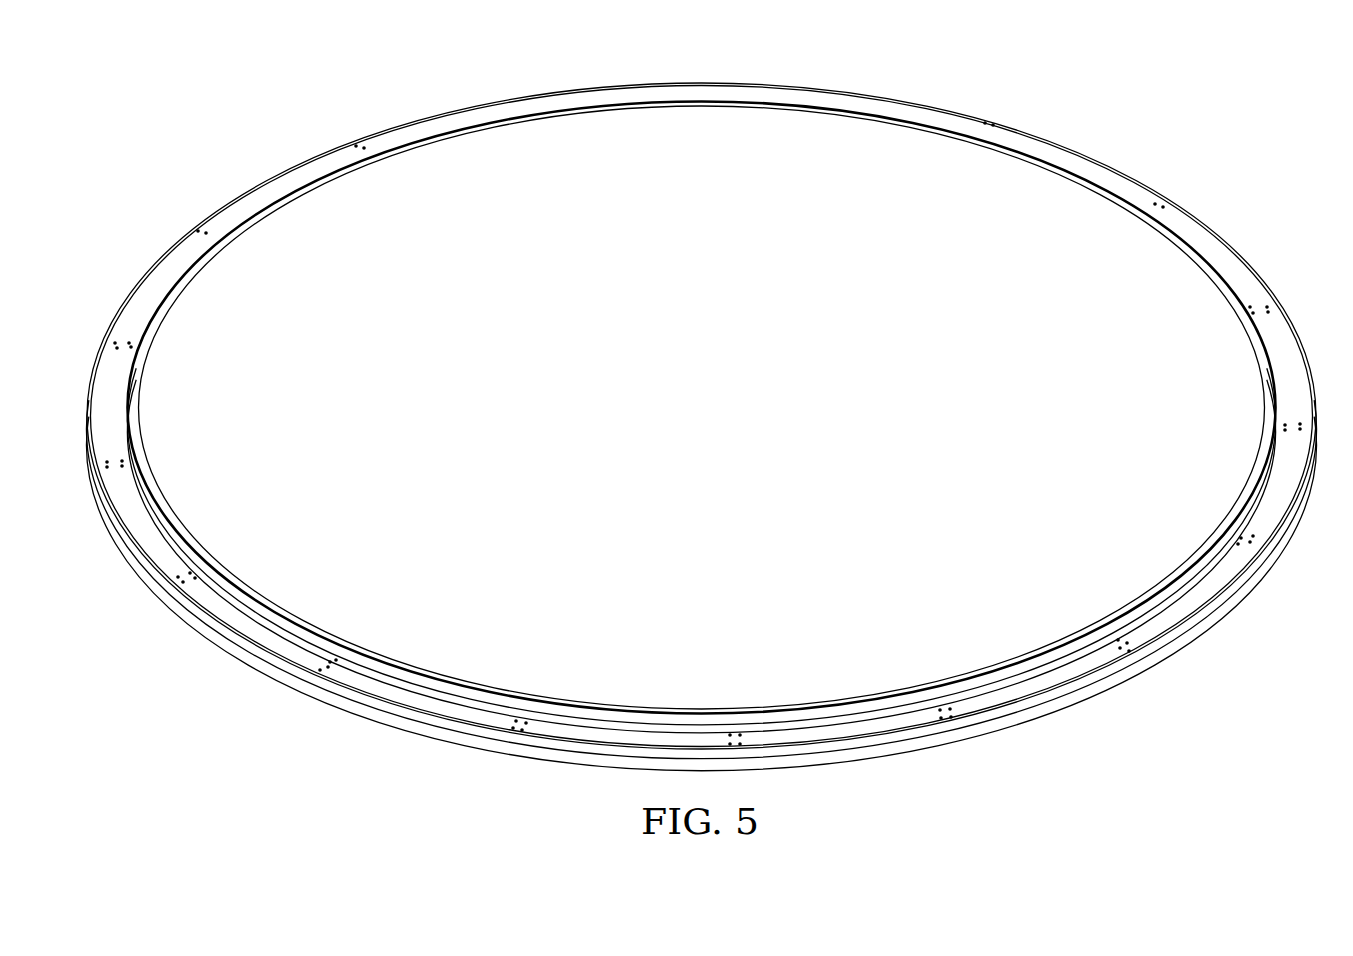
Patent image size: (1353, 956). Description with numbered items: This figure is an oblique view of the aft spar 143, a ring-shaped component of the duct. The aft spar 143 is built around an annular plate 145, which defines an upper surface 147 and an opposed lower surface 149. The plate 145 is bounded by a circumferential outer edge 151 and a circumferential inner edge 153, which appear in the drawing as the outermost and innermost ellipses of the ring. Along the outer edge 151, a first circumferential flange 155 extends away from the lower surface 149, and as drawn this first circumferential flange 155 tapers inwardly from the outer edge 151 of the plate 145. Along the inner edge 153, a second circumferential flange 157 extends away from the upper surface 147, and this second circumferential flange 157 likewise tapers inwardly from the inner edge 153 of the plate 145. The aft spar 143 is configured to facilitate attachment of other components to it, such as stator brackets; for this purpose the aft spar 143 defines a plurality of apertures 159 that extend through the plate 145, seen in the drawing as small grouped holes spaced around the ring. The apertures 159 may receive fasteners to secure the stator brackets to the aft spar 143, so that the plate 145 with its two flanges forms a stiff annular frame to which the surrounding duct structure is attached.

The aft spar 143 is at (1131, 102).
The annular plate 145 is at (303, 655).
The upper surface 147 is at (247, 200).
The lower surface 149 is at (262, 213).
The circumferential outer edge 151 is at (453, 727).
The circumferential inner edge 153 is at (410, 684).
The first circumferential flange 155 is at (558, 758).
The second circumferential flange 157 is at (548, 707).
The apertures 159 is at (1135, 647).